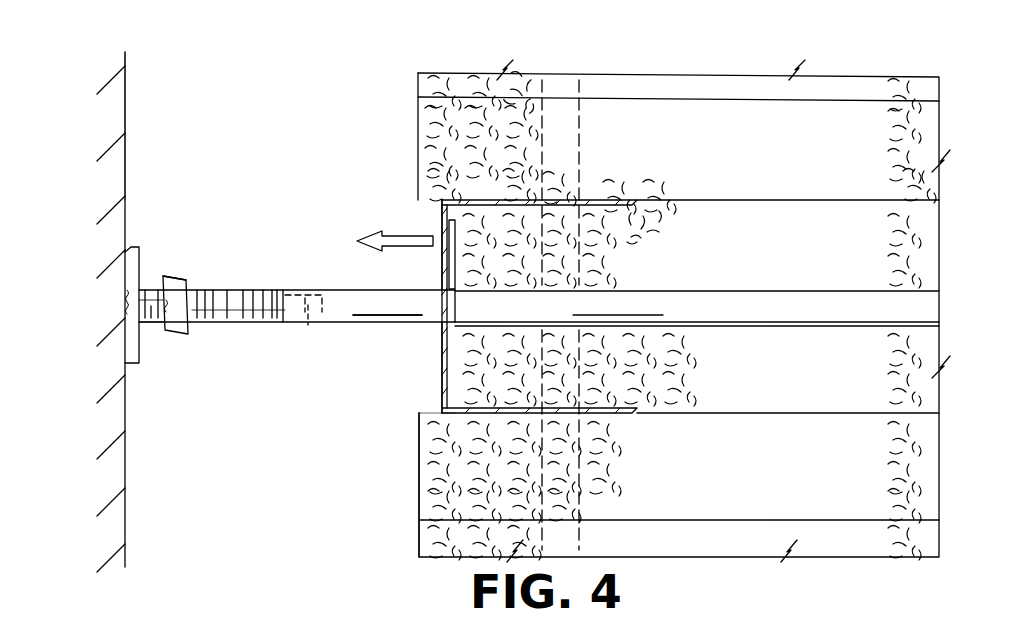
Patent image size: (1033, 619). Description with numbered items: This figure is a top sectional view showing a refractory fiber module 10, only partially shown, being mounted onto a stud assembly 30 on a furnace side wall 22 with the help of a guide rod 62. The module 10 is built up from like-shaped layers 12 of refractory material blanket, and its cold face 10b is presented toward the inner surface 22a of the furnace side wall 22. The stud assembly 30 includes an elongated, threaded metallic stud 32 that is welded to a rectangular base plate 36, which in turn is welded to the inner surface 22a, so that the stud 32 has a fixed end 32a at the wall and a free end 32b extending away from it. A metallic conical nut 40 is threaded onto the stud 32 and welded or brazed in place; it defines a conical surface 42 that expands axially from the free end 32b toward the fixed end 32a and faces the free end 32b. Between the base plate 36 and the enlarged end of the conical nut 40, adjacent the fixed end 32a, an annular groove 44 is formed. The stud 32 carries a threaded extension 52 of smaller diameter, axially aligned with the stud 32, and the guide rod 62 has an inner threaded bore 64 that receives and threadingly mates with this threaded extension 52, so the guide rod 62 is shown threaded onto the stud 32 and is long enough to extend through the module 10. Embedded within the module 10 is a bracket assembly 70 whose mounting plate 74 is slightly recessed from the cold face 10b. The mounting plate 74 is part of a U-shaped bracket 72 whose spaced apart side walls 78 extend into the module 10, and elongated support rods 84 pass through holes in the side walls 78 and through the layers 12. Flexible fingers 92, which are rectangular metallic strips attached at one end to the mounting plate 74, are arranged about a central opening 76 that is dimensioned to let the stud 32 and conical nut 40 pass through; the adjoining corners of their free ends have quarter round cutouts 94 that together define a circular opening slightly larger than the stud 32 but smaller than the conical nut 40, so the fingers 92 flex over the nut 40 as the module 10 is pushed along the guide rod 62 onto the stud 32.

The refractory fiber module 10 is at (684, 310).
The cold face 10b is at (420, 480).
The layers 12 is at (838, 92).
The furnace side wall 22 is at (130, 84).
The inner surface 22a is at (125, 117).
The stud assembly 30 is at (401, 228).
The stud 32 is at (228, 290).
The fixed end 32a is at (145, 290).
The free end 32b is at (276, 290).
The base plate 36 is at (130, 262).
The conical nut 40 is at (183, 338).
The conical surface 42 is at (185, 280).
The annular groove 44 is at (153, 330).
The threaded extension 52 is at (307, 328).
The guide rod 62 is at (392, 316).
The inner threaded bore 64 is at (303, 292).
The bracket assembly 70 is at (473, 290).
The U-shaped bracket 72 is at (436, 406).
The mounting plate 74 is at (440, 233).
The central opening 76 is at (446, 272).
The side walls 78 is at (602, 205).
The support rods 84 is at (572, 503).
The flexible fingers 92 is at (458, 246).
The quarter round cutouts 94 is at (454, 292).